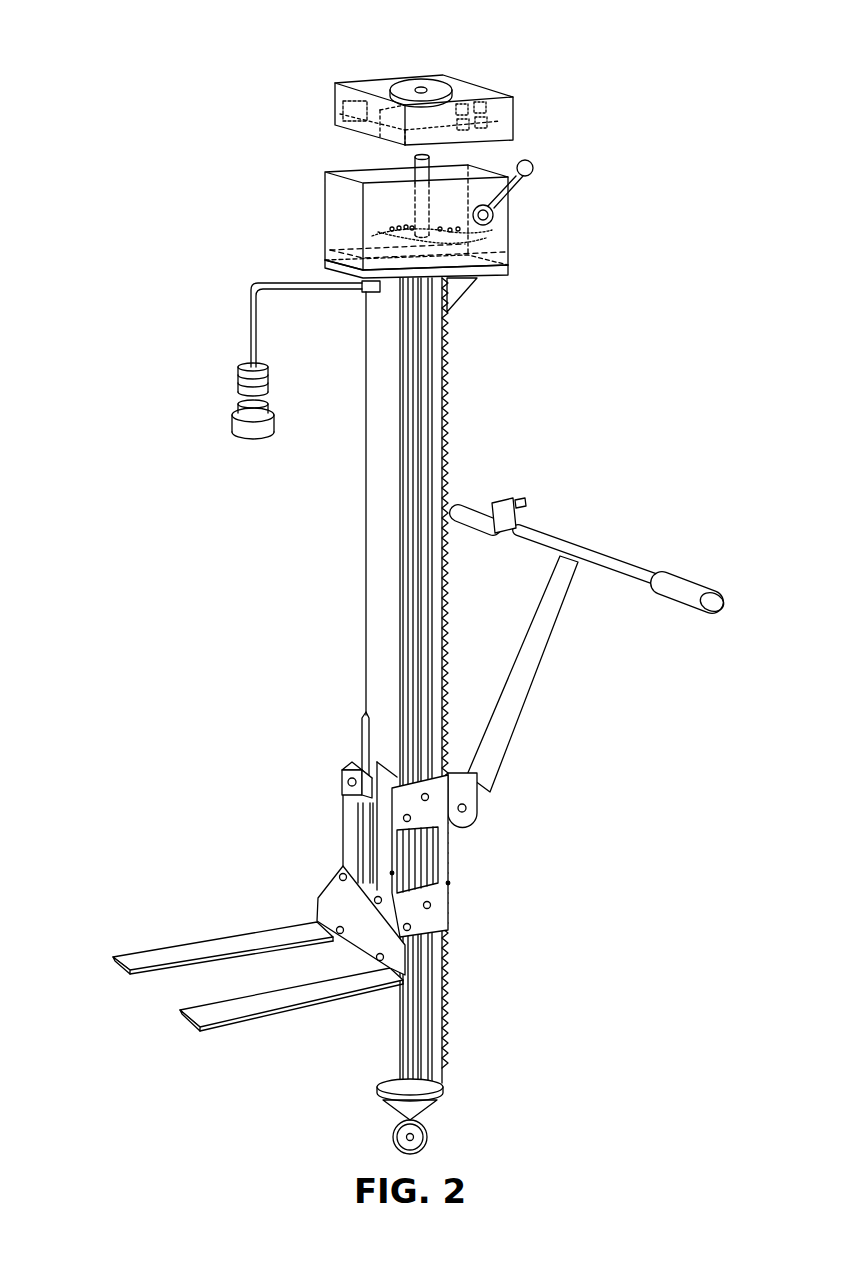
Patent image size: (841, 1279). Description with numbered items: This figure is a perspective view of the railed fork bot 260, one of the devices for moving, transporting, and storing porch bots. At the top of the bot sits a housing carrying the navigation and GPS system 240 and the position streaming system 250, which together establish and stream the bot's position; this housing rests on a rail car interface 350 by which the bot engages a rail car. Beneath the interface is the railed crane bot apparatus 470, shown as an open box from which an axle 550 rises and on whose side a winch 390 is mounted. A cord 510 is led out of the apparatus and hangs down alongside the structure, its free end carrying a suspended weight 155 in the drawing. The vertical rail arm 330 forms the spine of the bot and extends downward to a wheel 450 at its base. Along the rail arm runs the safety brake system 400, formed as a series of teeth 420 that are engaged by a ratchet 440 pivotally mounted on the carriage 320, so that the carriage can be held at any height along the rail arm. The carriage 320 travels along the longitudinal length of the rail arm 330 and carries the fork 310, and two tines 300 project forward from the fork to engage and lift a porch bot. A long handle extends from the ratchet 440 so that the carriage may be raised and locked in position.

The railed fork bot 260 is at (157, 68).
The navigation and GPS system 240 is at (348, 100).
The position streaming system 250 is at (463, 82).
The rail car interface 350 is at (478, 92).
The railed crane bot apparatus 470 is at (323, 248).
The axle 550 is at (417, 213).
The winch 390 is at (490, 233).
The cord 510 is at (363, 328).
The weight 155 is at (240, 378).
The rail arm 330 is at (428, 378).
The safety brake system 400 is at (440, 453).
The tooth 420 is at (440, 613).
The ratchet 440 is at (477, 803).
The carriage 320 is at (342, 773).
The fork 310 is at (317, 910).
The tine 300 is at (113, 957).
The wheel 450 is at (428, 1137).